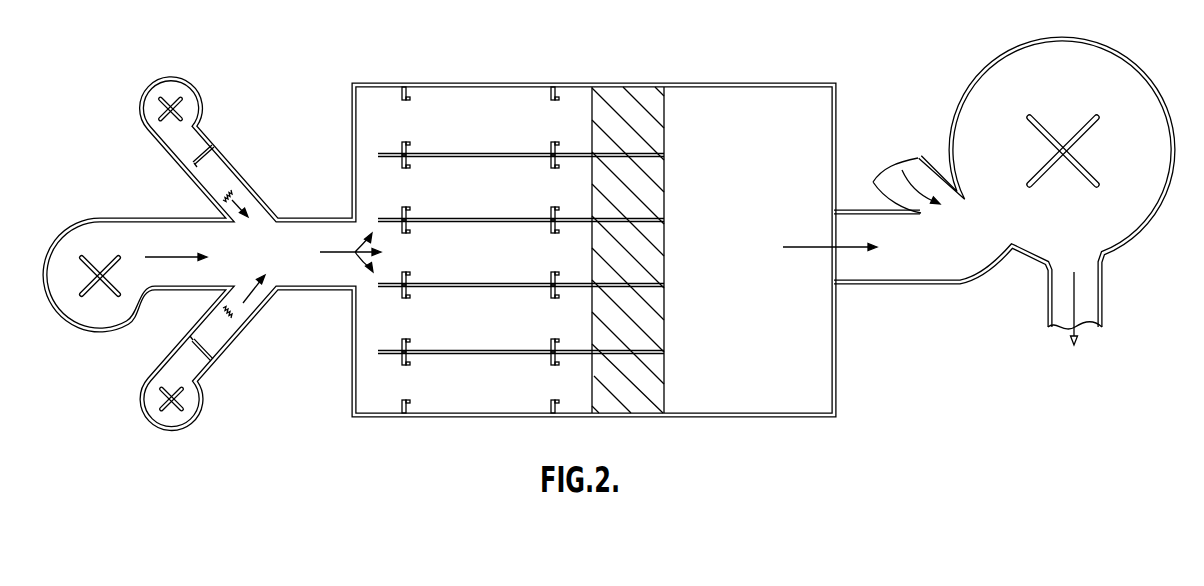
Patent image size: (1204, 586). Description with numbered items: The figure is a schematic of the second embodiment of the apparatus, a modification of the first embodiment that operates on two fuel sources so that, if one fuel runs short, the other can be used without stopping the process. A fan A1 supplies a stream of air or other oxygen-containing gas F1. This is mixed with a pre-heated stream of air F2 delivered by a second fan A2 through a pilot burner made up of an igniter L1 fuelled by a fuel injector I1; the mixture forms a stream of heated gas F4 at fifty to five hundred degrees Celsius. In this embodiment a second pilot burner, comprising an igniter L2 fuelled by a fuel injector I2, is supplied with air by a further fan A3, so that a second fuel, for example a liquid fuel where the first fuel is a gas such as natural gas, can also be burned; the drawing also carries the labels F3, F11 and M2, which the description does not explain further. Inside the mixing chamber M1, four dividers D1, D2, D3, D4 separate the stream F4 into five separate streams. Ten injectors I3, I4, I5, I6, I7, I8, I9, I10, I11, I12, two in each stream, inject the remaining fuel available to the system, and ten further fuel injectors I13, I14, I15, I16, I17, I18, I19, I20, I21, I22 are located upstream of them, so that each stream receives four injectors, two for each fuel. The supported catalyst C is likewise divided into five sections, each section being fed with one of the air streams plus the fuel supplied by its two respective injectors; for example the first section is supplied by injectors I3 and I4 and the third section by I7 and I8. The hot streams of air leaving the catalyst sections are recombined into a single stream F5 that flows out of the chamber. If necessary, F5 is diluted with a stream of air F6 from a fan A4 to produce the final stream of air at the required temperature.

The fan A1 is at (99, 331).
The fan A2 is at (199, 412).
The fan A3 is at (178, 79).
The fan A4 is at (1139, 227).
The supported catalyst C is at (634, 92).
The divider D1 is at (502, 152).
The divider D2 is at (490, 197).
The divider D3 is at (487, 283).
The divider D4 is at (487, 350).
The stream of air or other oxygen-containing gas F1 is at (176, 244).
The pre-heated stream of oxygen-containing gas F2 is at (258, 293).
The upper branch flow F3 is at (253, 210).
The stream of heated gas F4 is at (1083, 278).
The stream F5 is at (830, 237).
The stream of air F6 is at (917, 158).
The distributed inlet flow F11 is at (350, 249).
The fuel injector I1 is at (207, 340).
The fuel injector I2 is at (204, 167).
The injector I3 is at (563, 104).
The injector I4 is at (563, 143).
The injector I5 is at (563, 172).
The injector I6 is at (563, 208).
The injector I7 is at (563, 236).
The injector I8 is at (563, 273).
The injector I9 is at (563, 300).
The injector I10 is at (568, 340).
The injector I11 is at (568, 367).
The injector I12 is at (568, 403).
The fuel injector I13 is at (422, 104).
The fuel injector I14 is at (422, 143).
The fuel injector I15 is at (422, 172).
The fuel injector I16 is at (422, 208).
The fuel injector I17 is at (422, 236).
The fuel injector I18 is at (422, 273).
The fuel injector I19 is at (422, 300).
The fuel injector I20 is at (422, 340).
The fuel injector I21 is at (422, 367).
The fuel injector I22 is at (422, 403).
The igniter L1 is at (236, 326).
The igniter L2 is at (231, 185).
The mixing chamber M1 is at (362, 277).
The chamber housing M2 is at (751, 415).